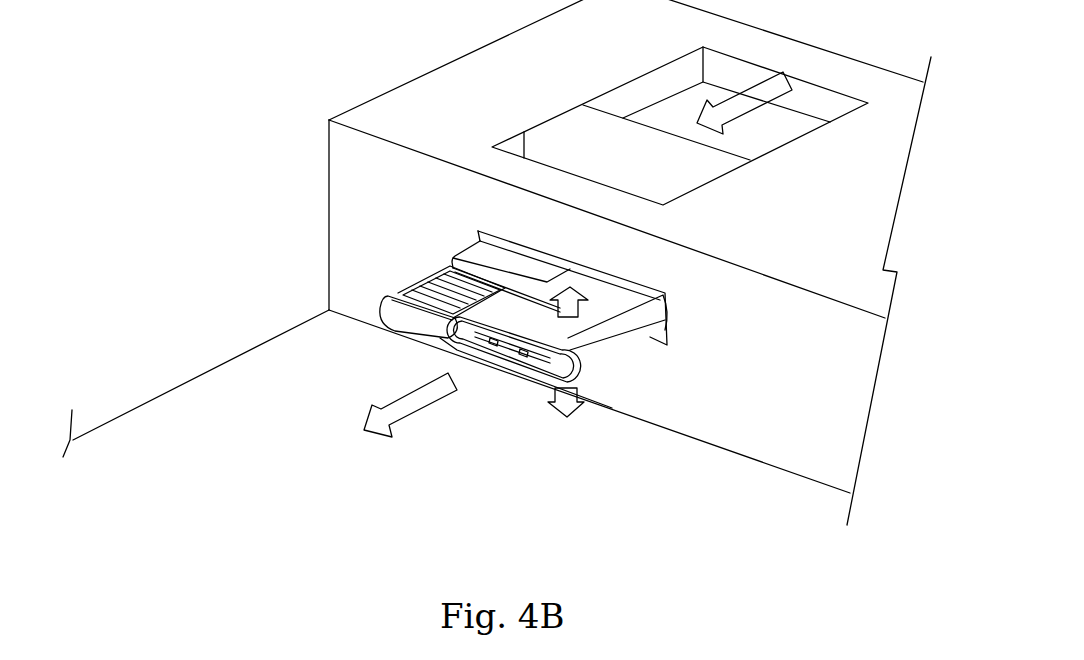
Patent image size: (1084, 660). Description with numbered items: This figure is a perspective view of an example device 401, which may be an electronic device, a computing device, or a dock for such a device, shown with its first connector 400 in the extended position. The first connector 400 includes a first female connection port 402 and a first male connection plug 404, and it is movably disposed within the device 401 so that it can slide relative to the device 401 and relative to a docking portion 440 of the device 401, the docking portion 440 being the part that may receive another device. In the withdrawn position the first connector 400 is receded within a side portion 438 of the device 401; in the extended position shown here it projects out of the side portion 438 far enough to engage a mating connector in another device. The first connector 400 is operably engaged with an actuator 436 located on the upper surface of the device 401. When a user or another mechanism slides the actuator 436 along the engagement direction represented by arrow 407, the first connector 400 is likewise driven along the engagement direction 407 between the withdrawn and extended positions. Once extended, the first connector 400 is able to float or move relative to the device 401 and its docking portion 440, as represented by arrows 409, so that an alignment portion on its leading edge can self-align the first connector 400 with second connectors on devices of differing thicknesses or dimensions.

The first connector 400 is at (617, 365).
The device 401 is at (232, 83).
The first female connection port 402 is at (507, 348).
The first male connection plug 404 is at (392, 316).
The engagement direction arrow 407 is at (762, 88).
The float arrows 409 is at (583, 302).
The actuator 436 is at (613, 142).
The side portion 438 is at (395, 248).
The docking portion 440 is at (238, 395).